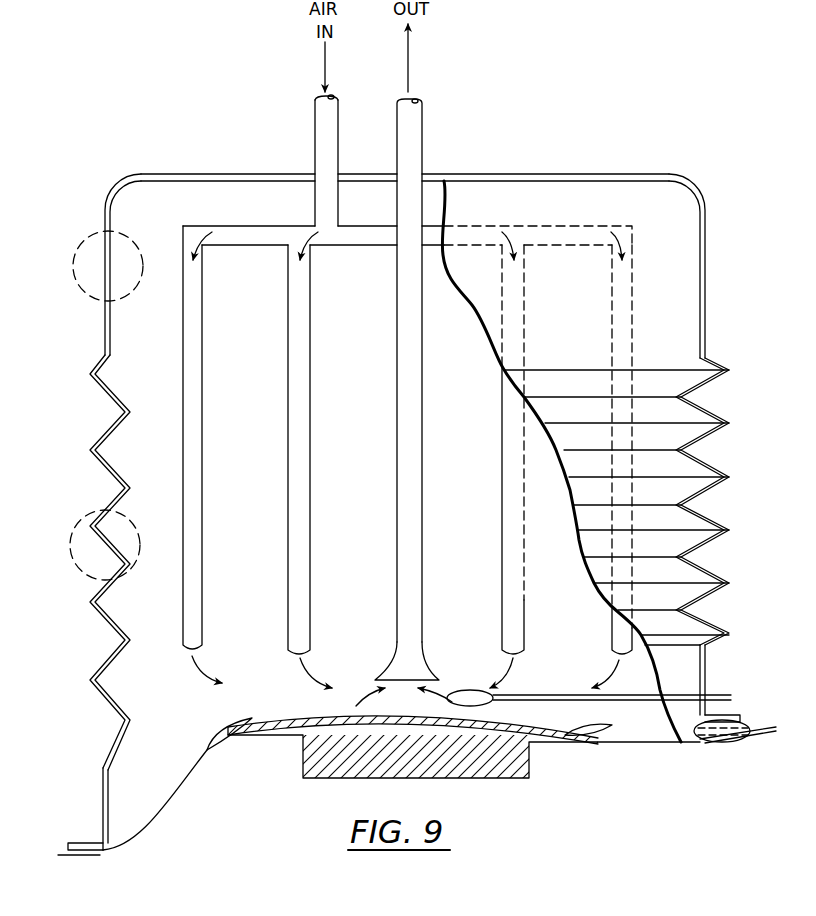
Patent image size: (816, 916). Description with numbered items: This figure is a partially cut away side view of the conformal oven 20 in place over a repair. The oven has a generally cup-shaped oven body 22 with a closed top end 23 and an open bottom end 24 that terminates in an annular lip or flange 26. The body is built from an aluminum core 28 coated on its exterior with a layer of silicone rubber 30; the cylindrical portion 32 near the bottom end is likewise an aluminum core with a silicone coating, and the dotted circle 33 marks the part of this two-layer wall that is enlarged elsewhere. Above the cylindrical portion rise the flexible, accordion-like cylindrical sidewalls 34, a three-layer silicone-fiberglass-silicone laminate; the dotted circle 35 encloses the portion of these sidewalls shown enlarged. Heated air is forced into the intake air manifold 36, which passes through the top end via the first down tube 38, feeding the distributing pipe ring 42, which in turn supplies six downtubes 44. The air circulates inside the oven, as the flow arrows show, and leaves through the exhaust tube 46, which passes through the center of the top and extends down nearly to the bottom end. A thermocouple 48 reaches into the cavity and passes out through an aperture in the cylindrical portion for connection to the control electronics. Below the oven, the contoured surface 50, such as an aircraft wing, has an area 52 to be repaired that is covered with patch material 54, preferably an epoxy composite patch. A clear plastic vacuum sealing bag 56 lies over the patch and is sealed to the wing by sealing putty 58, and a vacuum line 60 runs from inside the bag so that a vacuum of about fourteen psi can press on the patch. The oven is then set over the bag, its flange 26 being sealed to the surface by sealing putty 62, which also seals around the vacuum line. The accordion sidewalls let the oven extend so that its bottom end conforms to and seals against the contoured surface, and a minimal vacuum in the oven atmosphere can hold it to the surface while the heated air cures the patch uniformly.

The conformal oven 20 is at (163, 158).
The oven body 22 is at (205, 172).
The closed top end 23 is at (278, 172).
The open bottom end 24 is at (155, 800).
The annular lip or flange 26 is at (76, 838).
The aluminum core 28 is at (678, 192).
The layer of silicone rubber 30 is at (631, 176).
The cylindrical portion 32 is at (114, 790).
The dotted circle 33 is at (72, 268).
The flexible accordion-like cylindrical sidewalls 34 is at (97, 418).
The dotted circle 35 is at (71, 545).
The intake air manifold 36 is at (346, 118).
The first down tube 38 is at (314, 126).
The distributing pipe ring 42 is at (568, 238).
The downtubes 44 is at (205, 392).
The exhaust tube 46 is at (423, 122).
The thermocouple 48 is at (522, 697).
The contoured surface 50 is at (262, 772).
The area to be repaired 52 is at (537, 765).
The patch material 54 is at (429, 760).
The vacuum sealing bag 56 is at (292, 712).
The sealing putty 58 is at (228, 727).
The vacuum line 60 is at (650, 733).
The sealing putty 62 is at (88, 857).